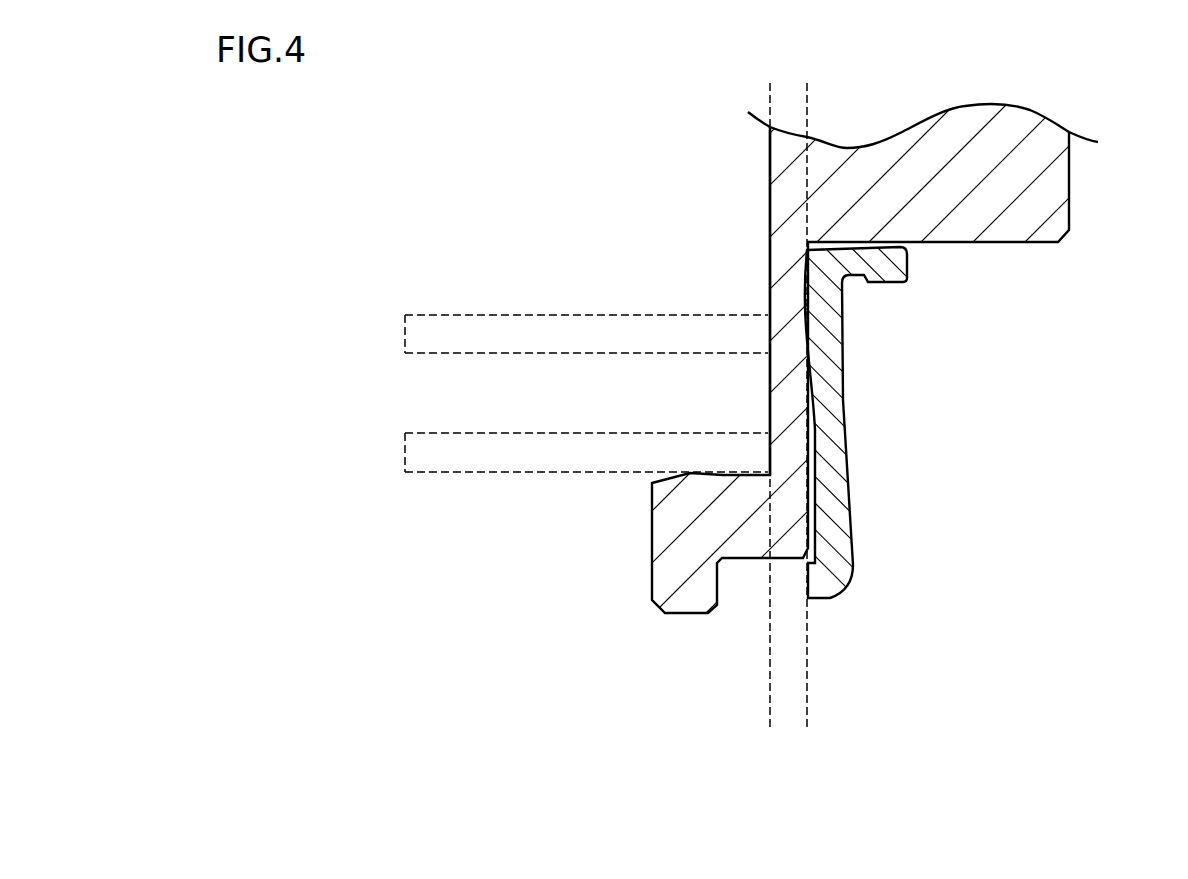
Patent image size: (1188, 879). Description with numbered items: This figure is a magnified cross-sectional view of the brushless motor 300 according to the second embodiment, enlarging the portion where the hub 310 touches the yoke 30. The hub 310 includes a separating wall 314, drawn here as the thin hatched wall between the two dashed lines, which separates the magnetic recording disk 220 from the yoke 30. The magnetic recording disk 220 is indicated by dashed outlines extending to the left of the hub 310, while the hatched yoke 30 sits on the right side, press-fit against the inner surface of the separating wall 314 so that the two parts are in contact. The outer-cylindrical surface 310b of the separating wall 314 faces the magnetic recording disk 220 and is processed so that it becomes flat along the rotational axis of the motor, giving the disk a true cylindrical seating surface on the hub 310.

The brushless motor 300 is at (788, 822).
The hub 310 is at (965, 127).
The outer-cylindrical surface 310b is at (768, 163).
The separating wall 314 is at (808, 742).
The yoke 30 is at (828, 583).
The magnetic recording disk 220 is at (440, 337).